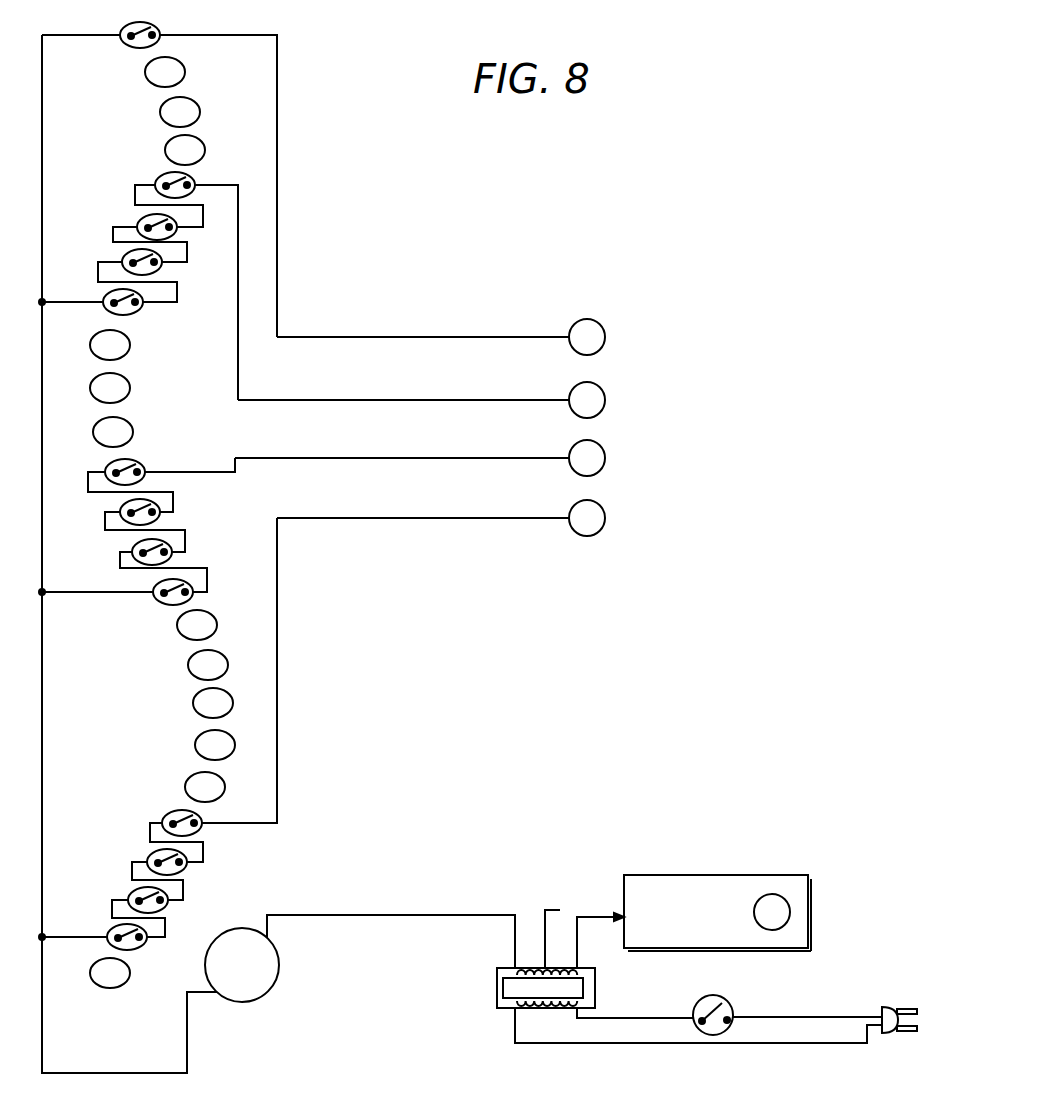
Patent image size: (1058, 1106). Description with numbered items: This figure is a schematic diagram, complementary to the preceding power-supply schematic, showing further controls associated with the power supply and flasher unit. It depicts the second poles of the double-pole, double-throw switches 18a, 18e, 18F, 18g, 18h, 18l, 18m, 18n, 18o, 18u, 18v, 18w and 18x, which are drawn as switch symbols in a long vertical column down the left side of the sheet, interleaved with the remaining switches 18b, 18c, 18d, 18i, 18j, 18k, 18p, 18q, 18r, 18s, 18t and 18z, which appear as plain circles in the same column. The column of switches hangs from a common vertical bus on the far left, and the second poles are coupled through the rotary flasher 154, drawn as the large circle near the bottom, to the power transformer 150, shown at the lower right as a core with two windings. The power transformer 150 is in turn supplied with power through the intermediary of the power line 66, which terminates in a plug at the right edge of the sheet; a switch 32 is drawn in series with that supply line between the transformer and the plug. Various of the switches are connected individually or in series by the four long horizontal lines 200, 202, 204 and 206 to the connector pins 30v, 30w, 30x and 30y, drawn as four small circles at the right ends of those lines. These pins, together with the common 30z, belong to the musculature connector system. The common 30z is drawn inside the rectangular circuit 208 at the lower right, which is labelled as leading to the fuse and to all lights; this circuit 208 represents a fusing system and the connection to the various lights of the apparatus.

The switch 18a is at (158, 28).
The switch 18b is at (186, 73).
The switch 18c is at (201, 112).
The switch 18d is at (206, 152).
The switch 18e is at (194, 178).
The switch 18F is at (141, 220).
The switch 18g is at (125, 256).
The switch 18h is at (106, 294).
The switch 18i is at (131, 345).
The switch 18j is at (131, 388).
The switch 18k is at (134, 432).
The switch 18l is at (142, 463).
The switch 18m is at (161, 518).
The switch 18n is at (173, 558).
The switch 18o is at (194, 598).
The switch 18p is at (218, 625).
The switch 18q is at (188, 667).
The switch 18r is at (193, 704).
The switch 18s is at (195, 745).
The switch 18t is at (190, 787).
The switch 18u is at (166, 814).
The switch 18v is at (188, 864).
The switch 18w is at (169, 905).
The switch 18x is at (141, 947).
The switch 18z is at (125, 985).
The connector pin 30v is at (605, 337).
The connector pin 30w is at (605, 400).
The connector pin 30x is at (605, 458).
The connector pin 30y is at (605, 518).
The common 30z is at (788, 921).
The line 200 is at (425, 334).
The line 202 is at (445, 395).
The line 204 is at (462, 454).
The line 206 is at (484, 514).
The circuit 208 is at (676, 884).
The switch 32 is at (693, 1008).
The power transformer 150 is at (497, 1010).
The rotary flasher 154 is at (238, 1000).
The power line 66 is at (878, 1035).